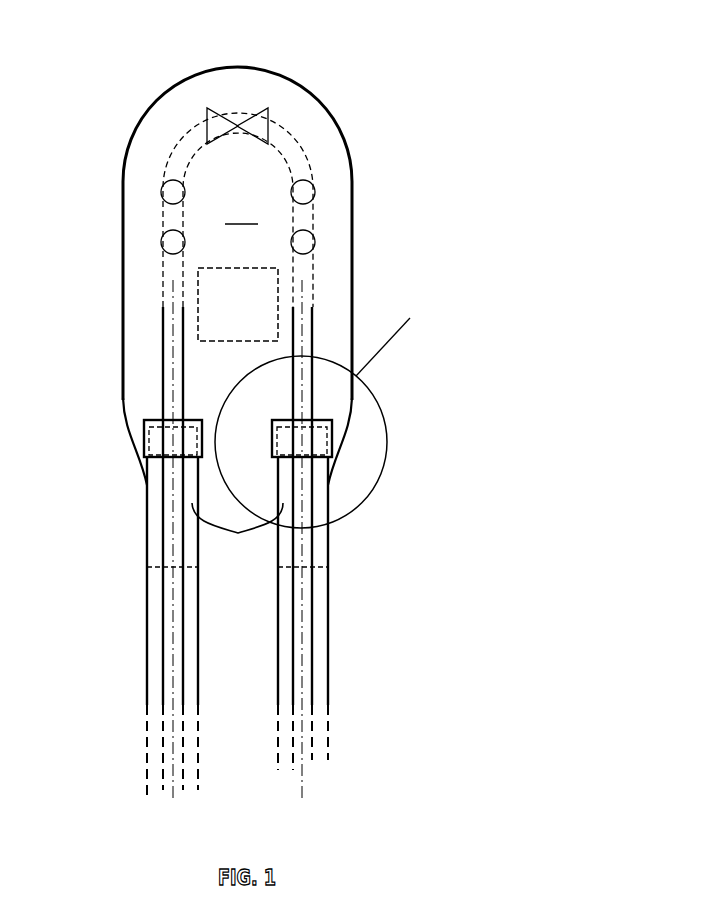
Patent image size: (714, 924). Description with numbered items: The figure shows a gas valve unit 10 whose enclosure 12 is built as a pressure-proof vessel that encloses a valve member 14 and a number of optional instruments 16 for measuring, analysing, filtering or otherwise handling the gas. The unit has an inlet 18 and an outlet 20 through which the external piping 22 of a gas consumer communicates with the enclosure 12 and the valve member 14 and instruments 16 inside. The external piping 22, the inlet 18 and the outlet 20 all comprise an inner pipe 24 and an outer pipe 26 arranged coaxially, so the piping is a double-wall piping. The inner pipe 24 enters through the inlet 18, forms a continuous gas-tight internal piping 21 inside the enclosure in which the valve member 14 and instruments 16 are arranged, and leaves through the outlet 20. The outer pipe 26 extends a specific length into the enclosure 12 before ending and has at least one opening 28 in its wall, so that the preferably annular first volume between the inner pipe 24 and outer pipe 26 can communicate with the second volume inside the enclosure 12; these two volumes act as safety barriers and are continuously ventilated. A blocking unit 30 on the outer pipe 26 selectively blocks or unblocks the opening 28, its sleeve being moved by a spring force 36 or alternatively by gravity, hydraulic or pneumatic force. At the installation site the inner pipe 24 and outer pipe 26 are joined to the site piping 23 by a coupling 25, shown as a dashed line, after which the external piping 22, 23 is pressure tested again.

The gas valve unit 10 is at (363, 103).
The enclosure 12 is at (122, 165).
The valve member 14 is at (218, 125).
The instruments 16 is at (161, 245).
The inlet 18 is at (141, 500).
The outlet 20 is at (334, 500).
The internal piping 21 is at (319, 162).
The external piping 22 is at (205, 568).
The piping of the installation site 23 is at (205, 669).
The inner pipe 24 is at (161, 562).
The coupling 25 is at (298, 570).
The outer pipe 26 is at (145, 533).
The opening 28 is at (145, 447).
The blocking unit 30 is at (143, 435).
The spring force 36 is at (290, 303).